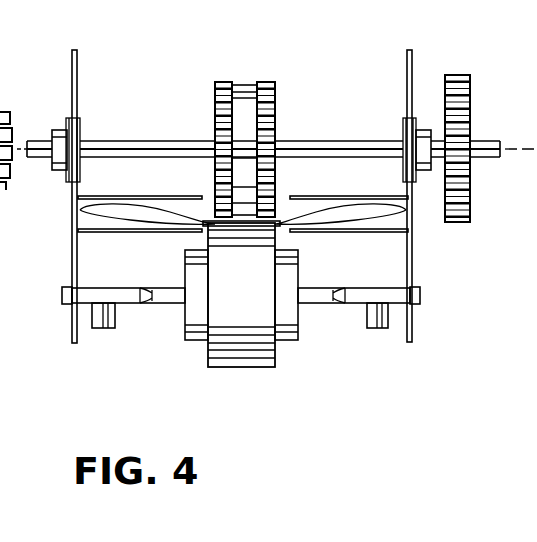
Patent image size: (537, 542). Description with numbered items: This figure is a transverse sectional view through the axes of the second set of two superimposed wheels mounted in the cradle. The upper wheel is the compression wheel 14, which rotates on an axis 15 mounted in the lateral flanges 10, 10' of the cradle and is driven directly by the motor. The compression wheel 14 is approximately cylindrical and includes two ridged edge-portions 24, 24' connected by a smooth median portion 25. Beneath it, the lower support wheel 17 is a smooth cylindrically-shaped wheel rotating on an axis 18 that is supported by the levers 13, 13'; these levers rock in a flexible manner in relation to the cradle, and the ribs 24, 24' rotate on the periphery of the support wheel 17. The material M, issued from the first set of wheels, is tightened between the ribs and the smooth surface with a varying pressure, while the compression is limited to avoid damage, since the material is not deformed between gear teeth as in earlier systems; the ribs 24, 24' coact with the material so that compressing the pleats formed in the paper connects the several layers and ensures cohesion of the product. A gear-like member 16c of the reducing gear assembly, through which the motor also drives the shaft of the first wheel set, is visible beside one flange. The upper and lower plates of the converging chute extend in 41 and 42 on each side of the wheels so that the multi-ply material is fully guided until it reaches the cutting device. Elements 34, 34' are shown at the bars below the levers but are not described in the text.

The lateral flange 10 is at (93, 179).
The lateral flange 10' is at (430, 179).
The lever 13 is at (97, 350).
The lever 13' is at (385, 350).
The compression wheel 14 is at (250, 124).
The axis 15 is at (362, 140).
The gear-like member 16c is at (458, 75).
The support wheel 17 is at (225, 368).
The axis 18 is at (158, 305).
The ridged edge-portion 24 is at (205, 137).
The ridged edge-portion 24' is at (290, 135).
The smooth median portion 25 is at (238, 85).
The left support bar 34 is at (93, 285).
The right support bar 34' is at (389, 283).
The plate extension 41 is at (116, 196).
The plate extension 42 is at (95, 232).
The material M is at (388, 207).